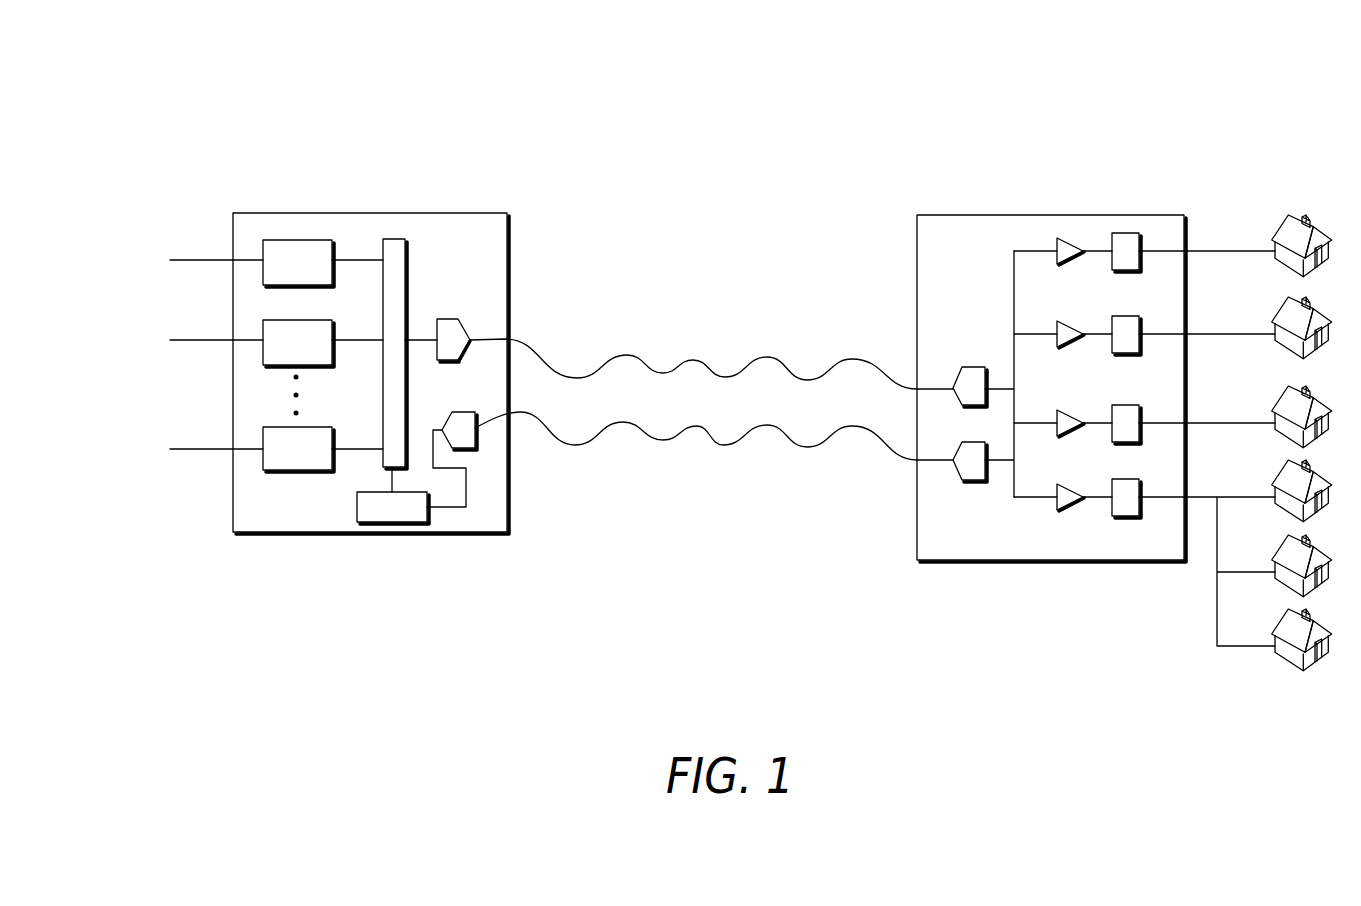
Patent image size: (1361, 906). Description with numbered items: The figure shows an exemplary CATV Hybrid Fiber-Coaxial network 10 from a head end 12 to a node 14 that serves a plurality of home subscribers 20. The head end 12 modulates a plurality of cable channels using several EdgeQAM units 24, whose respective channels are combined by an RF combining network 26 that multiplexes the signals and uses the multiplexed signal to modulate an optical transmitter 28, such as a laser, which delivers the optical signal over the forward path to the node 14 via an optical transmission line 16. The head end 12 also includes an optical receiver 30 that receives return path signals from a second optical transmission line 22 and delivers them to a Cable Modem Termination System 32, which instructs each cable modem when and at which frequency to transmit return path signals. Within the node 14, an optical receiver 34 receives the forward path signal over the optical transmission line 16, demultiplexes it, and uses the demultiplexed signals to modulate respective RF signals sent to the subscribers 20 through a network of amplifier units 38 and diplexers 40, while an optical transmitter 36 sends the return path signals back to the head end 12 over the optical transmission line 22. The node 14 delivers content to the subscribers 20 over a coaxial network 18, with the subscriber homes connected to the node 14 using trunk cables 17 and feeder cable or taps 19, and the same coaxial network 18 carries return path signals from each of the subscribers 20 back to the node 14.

The CATV Hybrid Fiber-Coaxial (HFC) network 10 is at (198, 92).
The head end 12 is at (257, 213).
The node 14 is at (930, 215).
The optical transmission line 16 is at (694, 357).
The trunk cables 17 is at (1217, 624).
The coaxial network 18 is at (1212, 237).
The feeder cable or taps 19 is at (1246, 496).
The subscribers 20 is at (1283, 171).
The optical transmission line 22 is at (807, 447).
The EdgeQAM units 24 is at (298, 240).
The RF combining network 26 is at (406, 257).
The optical transmitter 28 is at (449, 319).
The optical receiver 30 is at (462, 411).
The Cable Modem Termination System (CMTS) 32 is at (357, 507).
The optical receiver 34 is at (973, 367).
The optical transmitter 36 is at (972, 480).
The amplifier units 38 is at (1063, 265).
The diplexers 40 is at (1112, 264).